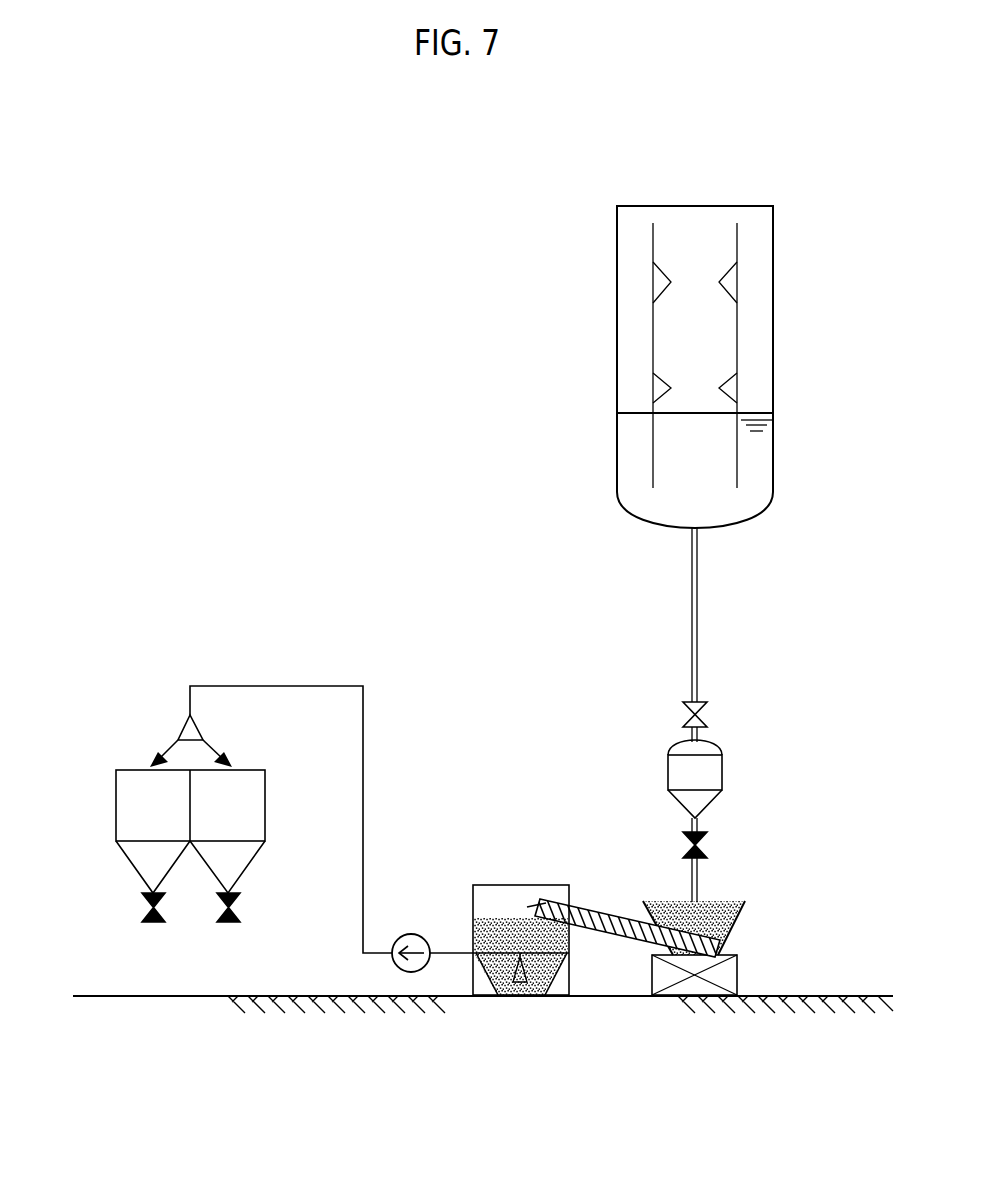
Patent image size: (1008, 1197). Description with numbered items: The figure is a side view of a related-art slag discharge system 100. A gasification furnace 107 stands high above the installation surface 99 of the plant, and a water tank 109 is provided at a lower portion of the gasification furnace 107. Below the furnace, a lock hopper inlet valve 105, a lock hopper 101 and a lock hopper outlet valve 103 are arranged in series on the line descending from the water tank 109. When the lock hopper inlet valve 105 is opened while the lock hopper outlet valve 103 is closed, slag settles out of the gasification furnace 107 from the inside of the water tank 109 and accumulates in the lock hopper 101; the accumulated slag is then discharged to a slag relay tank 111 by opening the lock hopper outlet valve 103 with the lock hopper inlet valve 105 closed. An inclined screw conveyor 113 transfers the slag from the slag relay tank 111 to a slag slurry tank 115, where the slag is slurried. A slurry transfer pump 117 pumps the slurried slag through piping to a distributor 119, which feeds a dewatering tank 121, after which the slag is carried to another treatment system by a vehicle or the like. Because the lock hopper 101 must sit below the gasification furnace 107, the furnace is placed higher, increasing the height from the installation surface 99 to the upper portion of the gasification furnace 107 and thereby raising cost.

The slag discharge system 100 is at (503, 561).
The gasification furnace 107 is at (773, 263).
The water tank 109 is at (773, 468).
The lock hopper inlet valve 105 is at (707, 703).
The lock hopper 101 is at (722, 760).
The lock hopper outlet valve 103 is at (707, 840).
The slag relay tank 111 is at (745, 912).
The screw conveyor 113 is at (613, 914).
The slag slurry tank 115 is at (515, 885).
The slurry transfer pump 117 is at (410, 934).
The distributor 119 is at (184, 722).
The dewatering tank 121 is at (116, 796).
The installation surface 99 is at (845, 995).